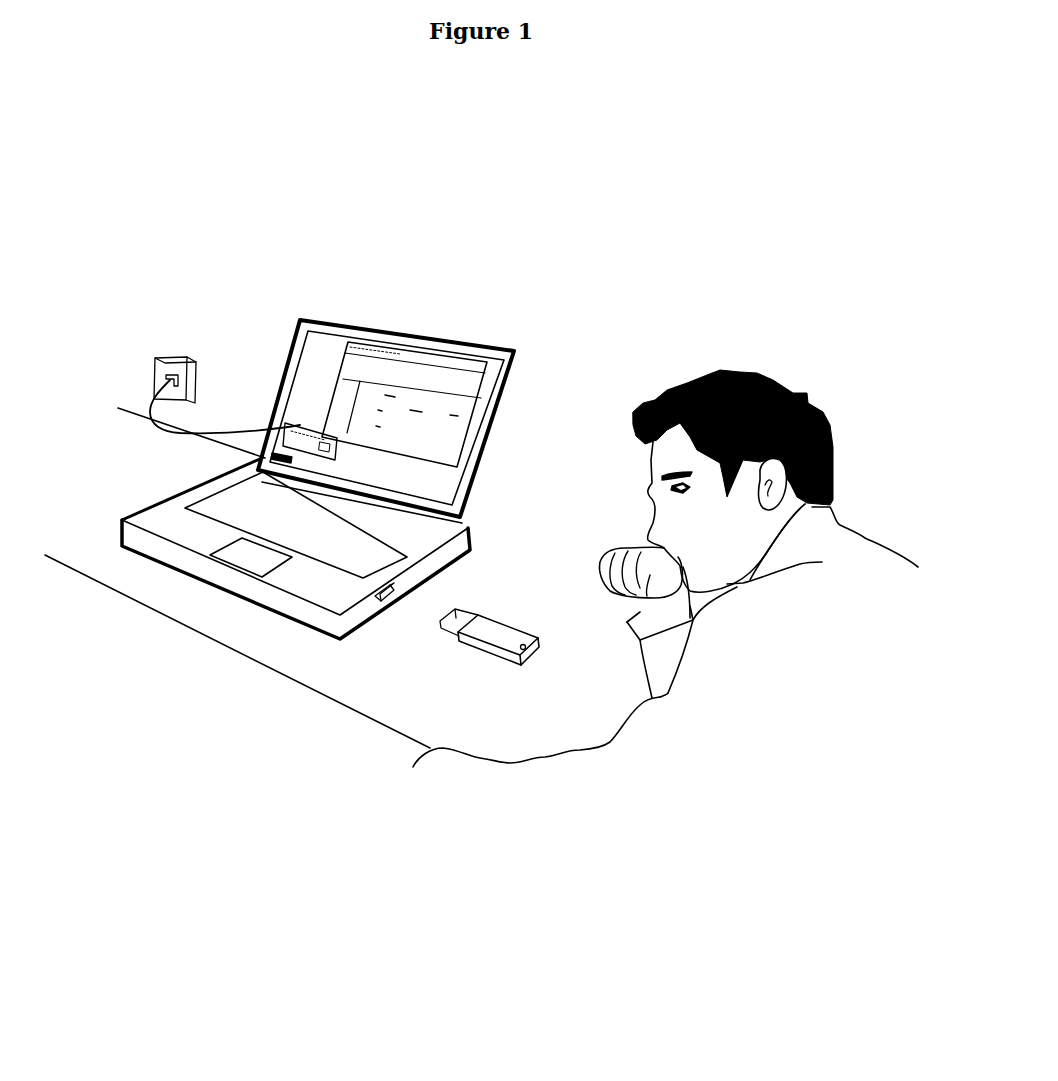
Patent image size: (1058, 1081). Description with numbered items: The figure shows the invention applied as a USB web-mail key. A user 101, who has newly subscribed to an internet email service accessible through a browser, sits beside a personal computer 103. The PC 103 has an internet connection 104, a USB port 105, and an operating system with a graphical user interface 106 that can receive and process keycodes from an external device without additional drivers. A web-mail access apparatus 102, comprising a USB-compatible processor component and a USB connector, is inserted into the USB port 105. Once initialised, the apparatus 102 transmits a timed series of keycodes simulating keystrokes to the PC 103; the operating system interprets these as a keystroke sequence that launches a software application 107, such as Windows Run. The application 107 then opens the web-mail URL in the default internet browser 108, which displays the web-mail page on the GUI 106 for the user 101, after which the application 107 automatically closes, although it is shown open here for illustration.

The user 101 is at (725, 745).
The web-mail access apparatus 102 is at (462, 648).
The personal computer 103 is at (517, 407).
The internet connection 104 is at (172, 356).
The USB port 105 is at (377, 607).
The graphical user interface 106 is at (318, 345).
The software application 107 is at (275, 430).
The internet browser 108 is at (430, 362).